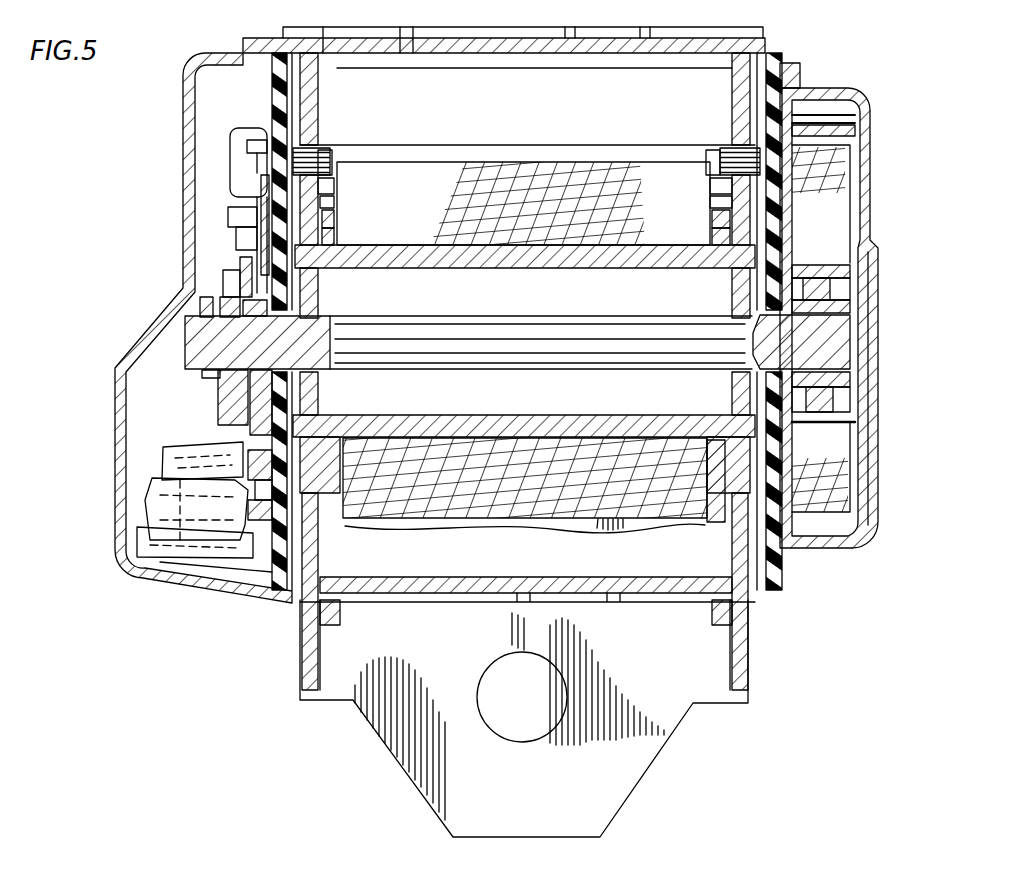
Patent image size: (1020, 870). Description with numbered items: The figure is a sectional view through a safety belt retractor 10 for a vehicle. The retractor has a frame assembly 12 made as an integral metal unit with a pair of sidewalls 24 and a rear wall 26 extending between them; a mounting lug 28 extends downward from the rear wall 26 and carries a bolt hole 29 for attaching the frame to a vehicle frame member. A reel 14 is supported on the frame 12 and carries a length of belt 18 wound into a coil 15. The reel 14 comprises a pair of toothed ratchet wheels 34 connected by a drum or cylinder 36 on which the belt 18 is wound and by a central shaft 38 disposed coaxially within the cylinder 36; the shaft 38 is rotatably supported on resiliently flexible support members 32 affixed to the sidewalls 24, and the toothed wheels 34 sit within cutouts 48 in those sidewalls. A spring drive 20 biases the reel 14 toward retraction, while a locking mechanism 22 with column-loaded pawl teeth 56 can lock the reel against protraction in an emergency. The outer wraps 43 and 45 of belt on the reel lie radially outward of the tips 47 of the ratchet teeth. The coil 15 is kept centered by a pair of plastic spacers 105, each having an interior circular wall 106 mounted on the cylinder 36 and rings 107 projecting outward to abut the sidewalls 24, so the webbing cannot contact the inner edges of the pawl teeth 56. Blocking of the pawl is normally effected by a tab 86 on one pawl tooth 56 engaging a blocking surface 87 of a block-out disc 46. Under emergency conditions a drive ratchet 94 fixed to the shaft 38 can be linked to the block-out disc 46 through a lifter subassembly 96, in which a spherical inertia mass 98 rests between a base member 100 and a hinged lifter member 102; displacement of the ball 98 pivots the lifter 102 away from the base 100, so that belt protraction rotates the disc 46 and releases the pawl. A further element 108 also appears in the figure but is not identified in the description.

The safety belt retractor 10 is at (274, 694).
The frame assembly 12 is at (318, 100).
The reel 14 is at (527, 162).
The coil 15 is at (537, 203).
The belt 18 is at (518, 526).
The spring drive 20 is at (880, 178).
The locking mechanism 22 is at (243, 602).
The sidewalls 24 is at (302, 652).
The rear wall 26 is at (640, 648).
The mounting lug 28 is at (500, 783).
The bolt hole 29 is at (480, 690).
The support member 32 is at (272, 90).
The toothed wheels 34 is at (722, 148).
The cylinder 36 is at (385, 407).
The central shaft 38 is at (594, 378).
The outer wrap 43 is at (668, 528).
The outer wrap 45 is at (670, 545).
The block-out disc 46 is at (247, 250).
The tips of ratchet wheel 47 is at (335, 190).
The cutouts 48 is at (322, 148).
The pawl teeth 56 is at (332, 160).
The tab 86 is at (247, 165).
The blocking surface 87 is at (243, 200).
The drive ratchet 94 is at (217, 273).
The lifter subassembly 96 is at (168, 587).
The spherical inertia mass 98 is at (150, 502).
The base member 100 is at (245, 547).
The hinged lifter member 102 is at (163, 460).
The spacers 105 is at (334, 222).
The interior circular wall 106 is at (325, 268).
The rings 107 is at (335, 236).
The lock washer 108 is at (334, 203).